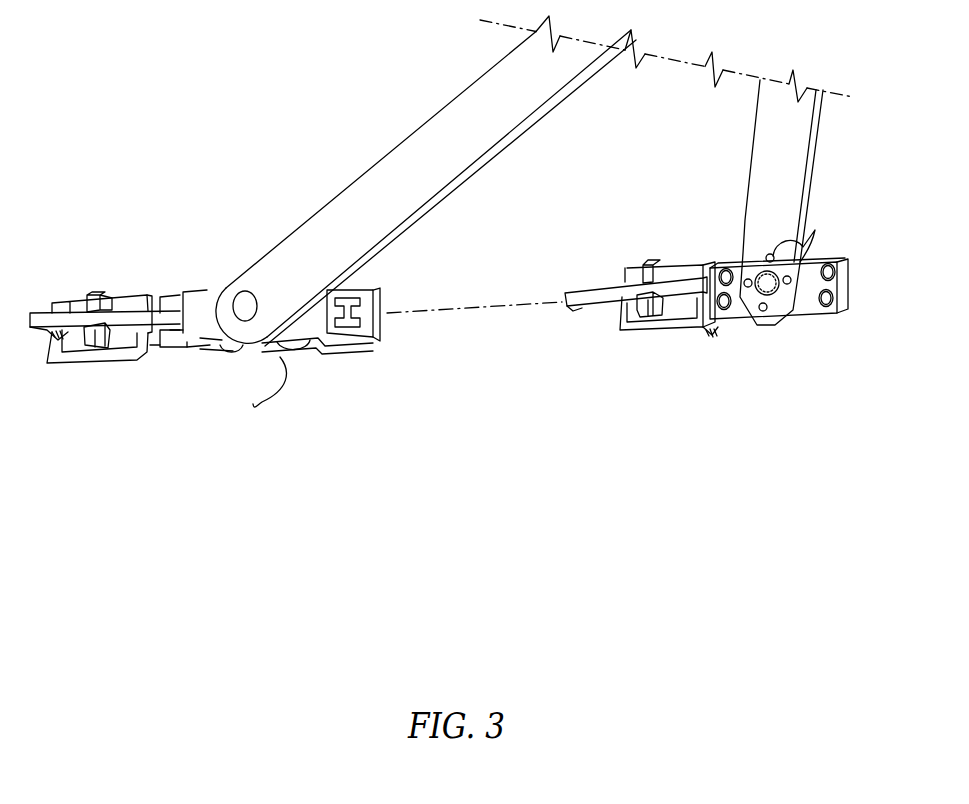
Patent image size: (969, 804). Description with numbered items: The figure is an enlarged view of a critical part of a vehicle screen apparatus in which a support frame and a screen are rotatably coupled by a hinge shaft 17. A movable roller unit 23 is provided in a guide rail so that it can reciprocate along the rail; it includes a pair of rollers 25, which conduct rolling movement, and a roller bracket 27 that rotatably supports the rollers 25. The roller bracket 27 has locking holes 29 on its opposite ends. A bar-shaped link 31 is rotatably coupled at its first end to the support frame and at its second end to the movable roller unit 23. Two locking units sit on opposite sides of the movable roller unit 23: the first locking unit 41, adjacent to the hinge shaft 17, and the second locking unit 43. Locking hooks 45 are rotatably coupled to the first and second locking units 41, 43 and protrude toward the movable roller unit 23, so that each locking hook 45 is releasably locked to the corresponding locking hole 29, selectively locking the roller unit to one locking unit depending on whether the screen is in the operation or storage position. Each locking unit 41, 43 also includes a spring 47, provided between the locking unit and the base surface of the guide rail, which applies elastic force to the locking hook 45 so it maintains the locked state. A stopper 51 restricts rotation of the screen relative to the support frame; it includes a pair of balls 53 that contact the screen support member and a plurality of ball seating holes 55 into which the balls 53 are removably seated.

The hinge shaft 17 is at (770, 293).
The movable roller unit 23 is at (352, 437).
The rollers 25 is at (258, 350).
The roller bracket 27 is at (208, 323).
The locking holes 29 is at (175, 348).
The link 31 is at (417, 147).
The first locking unit 41 is at (654, 337).
The second locking unit 43 is at (113, 381).
The locking hooks 45 is at (170, 300).
The spring 47 is at (42, 343).
The stopper 51 is at (845, 192).
The balls 53 is at (748, 292).
The ball seating holes 55 is at (745, 258).